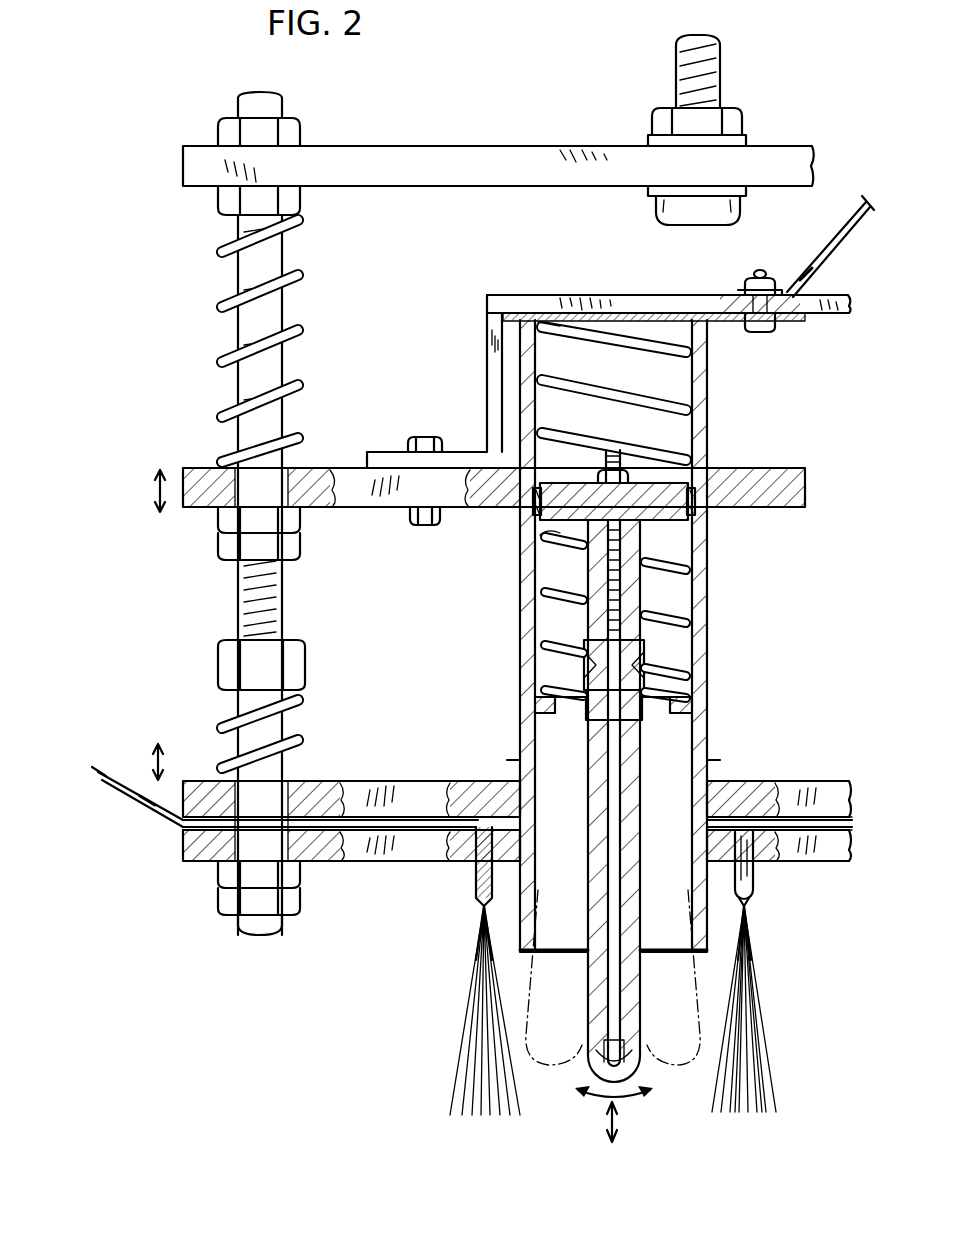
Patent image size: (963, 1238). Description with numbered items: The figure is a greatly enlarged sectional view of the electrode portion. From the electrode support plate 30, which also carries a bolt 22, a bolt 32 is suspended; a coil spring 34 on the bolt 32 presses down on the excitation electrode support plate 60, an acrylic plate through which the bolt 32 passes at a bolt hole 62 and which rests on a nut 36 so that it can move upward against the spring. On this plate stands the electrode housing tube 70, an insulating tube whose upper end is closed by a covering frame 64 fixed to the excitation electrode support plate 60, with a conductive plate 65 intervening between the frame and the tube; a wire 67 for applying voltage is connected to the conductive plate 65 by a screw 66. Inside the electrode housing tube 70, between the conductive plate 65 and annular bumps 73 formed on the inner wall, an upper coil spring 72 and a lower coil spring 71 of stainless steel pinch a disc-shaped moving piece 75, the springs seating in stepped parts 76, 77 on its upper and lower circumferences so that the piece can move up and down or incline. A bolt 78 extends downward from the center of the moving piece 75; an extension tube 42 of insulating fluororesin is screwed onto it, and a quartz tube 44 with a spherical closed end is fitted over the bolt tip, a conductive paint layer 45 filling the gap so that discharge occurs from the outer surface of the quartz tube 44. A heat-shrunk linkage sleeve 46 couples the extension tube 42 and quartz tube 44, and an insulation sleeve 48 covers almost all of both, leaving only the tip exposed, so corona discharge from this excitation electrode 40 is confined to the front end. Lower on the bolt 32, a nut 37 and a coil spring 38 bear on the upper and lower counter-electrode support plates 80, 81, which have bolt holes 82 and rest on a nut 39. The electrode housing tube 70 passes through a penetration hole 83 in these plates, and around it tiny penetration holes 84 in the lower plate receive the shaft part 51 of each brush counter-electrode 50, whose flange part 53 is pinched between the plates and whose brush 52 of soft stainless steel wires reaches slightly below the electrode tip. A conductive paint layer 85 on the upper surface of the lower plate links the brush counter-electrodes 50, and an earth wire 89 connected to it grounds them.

The bolt 22 is at (722, 68).
The electrode support plate 30 is at (465, 150).
The bolt 32 is at (240, 322).
The coil spring 34 is at (222, 240).
The nut 36 is at (222, 515).
The nut 37 is at (225, 648).
The coil spring 38 is at (225, 720).
The nut 39 is at (235, 900).
The excitation electrode 40 is at (580, 1064).
The extension tube 42 is at (592, 527).
The quartz tube 44 is at (628, 995).
The conductive paint layer 45 is at (637, 1062).
The linkage sleeve 46 is at (590, 662).
The insulation sleeve 48 is at (590, 748).
The brush counter-electrode 50 is at (768, 1051).
The shaft part 51 is at (480, 902).
The brush 52 is at (752, 995).
The flange part 53 is at (445, 818).
The excitation electrode support plate 60 is at (338, 468).
The bolt hole 62 is at (243, 462).
The covering frame 64 is at (488, 308).
The conductive plate 65 is at (728, 312).
The screw 66 is at (770, 322).
The wire 67 is at (848, 217).
The electrode housing tube 70 is at (708, 580).
The lower coil spring 71 is at (700, 655).
The upper coil spring 72 is at (700, 440).
The annular bumps 73 is at (700, 725).
The moving piece 75 is at (690, 522).
The stepped part 76 is at (690, 520).
The stepped part 77 is at (700, 458).
The bolt 78 is at (545, 560).
The upper counter-electrode support plate 80 is at (352, 781).
The lower counter-electrode support plate 81 is at (378, 862).
The bolt holes 82 is at (288, 762).
The penetration hole 83 is at (708, 762).
The tiny penetration holes 84 is at (476, 875).
The conductive paint layer 85 is at (180, 826).
The earth wire 89 is at (110, 775).